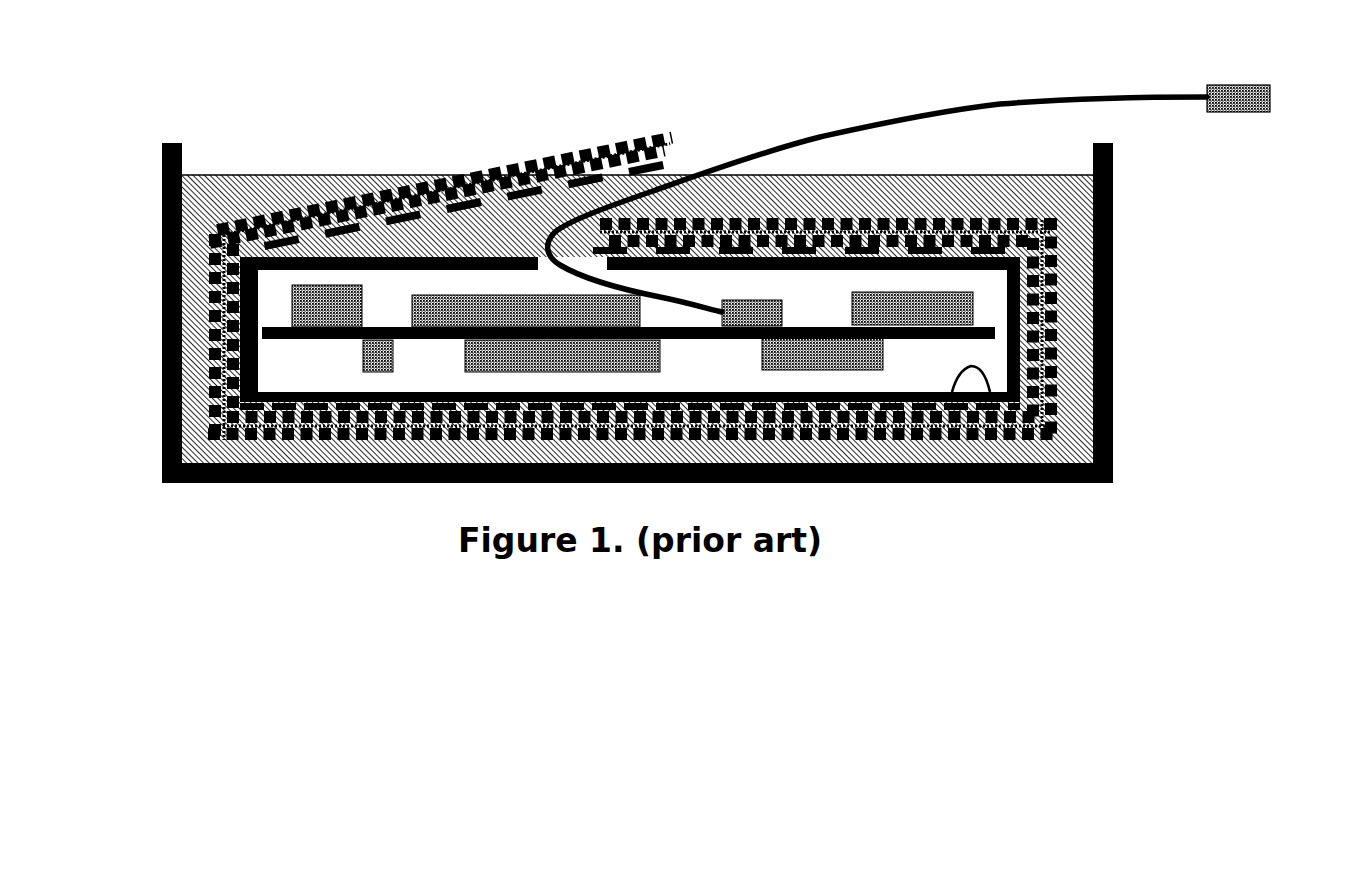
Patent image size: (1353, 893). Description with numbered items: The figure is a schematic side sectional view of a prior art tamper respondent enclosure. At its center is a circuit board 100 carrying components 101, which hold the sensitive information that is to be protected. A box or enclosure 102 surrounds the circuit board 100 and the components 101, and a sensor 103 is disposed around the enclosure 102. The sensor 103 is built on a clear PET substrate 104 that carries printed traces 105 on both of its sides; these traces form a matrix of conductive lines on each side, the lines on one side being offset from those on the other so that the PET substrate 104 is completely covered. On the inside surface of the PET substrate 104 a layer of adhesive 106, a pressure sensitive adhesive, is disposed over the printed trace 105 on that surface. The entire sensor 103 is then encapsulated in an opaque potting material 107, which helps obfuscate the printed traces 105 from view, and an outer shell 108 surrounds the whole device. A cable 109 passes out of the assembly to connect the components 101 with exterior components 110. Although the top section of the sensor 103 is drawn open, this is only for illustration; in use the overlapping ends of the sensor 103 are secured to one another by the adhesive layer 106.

The circuit board 100 is at (1003, 323).
The components 101 is at (923, 300).
The enclosure 102 is at (993, 442).
The sensor 103 is at (1050, 365).
The PET substrate 104 is at (1030, 405).
The printed traces 105 is at (683, 150).
The adhesive layer 106 is at (672, 166).
The potting material 107 is at (247, 193).
The outer shell 108 is at (165, 348).
The cable 109 is at (1033, 102).
The exterior components 110 is at (1253, 83).